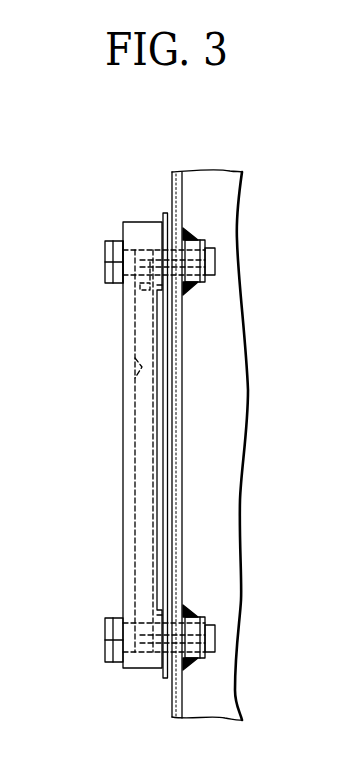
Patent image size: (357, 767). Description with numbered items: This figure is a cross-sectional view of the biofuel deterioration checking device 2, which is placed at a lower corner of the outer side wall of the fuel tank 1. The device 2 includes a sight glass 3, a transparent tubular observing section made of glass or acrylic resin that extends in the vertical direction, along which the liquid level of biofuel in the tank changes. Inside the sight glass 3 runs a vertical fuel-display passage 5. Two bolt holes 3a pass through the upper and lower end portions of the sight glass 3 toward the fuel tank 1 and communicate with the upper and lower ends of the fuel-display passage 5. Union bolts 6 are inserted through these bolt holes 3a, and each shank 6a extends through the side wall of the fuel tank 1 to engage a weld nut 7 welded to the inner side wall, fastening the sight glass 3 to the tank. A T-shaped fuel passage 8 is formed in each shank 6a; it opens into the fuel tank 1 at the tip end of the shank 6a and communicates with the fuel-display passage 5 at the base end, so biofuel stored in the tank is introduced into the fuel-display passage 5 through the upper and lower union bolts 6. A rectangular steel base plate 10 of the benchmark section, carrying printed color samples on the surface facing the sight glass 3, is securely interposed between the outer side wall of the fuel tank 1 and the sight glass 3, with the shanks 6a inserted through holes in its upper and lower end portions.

The fuel tank 1 is at (218, 178).
The biofuel deterioration checking device 2 is at (71, 180).
The sight glass 3 is at (121, 226).
The bolt holes 3a is at (121, 253).
The fuel-display passage 5 is at (133, 372).
The union bolts 6 is at (112, 268).
The shank 6a is at (212, 252).
The weld nuts 7 is at (208, 280).
The T-shaped fuel passage 8 is at (122, 287).
The base plate 10 is at (163, 213).